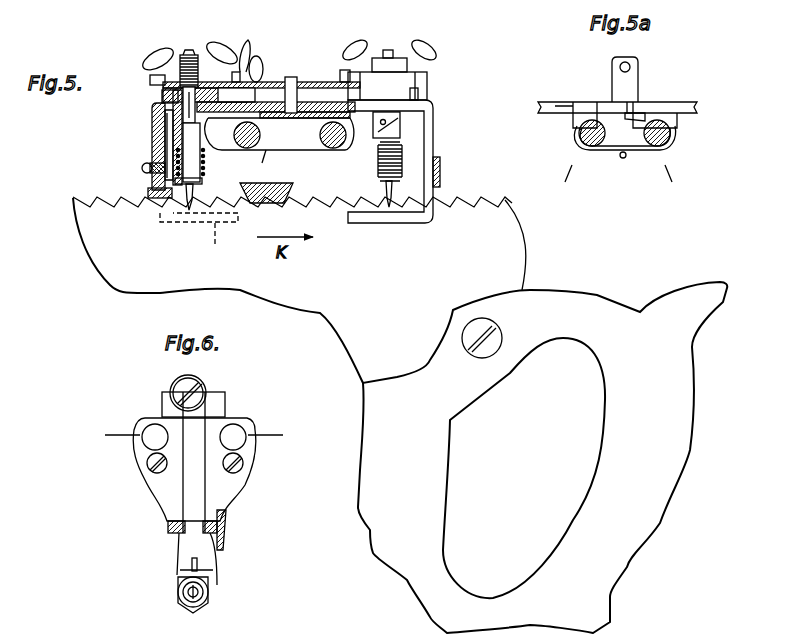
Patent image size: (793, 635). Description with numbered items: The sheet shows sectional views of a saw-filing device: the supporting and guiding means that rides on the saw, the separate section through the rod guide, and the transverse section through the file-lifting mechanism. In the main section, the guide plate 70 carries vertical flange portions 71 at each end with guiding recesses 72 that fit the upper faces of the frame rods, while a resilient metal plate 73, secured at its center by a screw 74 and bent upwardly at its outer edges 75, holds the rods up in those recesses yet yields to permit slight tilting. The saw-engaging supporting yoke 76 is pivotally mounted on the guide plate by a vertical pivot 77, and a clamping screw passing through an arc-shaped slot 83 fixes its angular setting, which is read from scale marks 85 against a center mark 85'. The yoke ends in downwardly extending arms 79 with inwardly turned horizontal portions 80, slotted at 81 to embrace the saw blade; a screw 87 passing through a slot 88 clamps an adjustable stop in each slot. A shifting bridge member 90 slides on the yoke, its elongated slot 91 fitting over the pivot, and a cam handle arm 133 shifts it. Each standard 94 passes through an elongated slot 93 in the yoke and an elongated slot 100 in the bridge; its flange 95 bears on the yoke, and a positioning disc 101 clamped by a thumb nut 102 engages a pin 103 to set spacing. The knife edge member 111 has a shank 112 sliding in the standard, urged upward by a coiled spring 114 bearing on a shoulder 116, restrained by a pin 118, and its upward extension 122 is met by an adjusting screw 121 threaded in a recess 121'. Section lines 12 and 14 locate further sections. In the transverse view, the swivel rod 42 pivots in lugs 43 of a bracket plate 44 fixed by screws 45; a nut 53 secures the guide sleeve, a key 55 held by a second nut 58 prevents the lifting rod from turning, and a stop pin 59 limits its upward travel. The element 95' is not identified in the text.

In FIG. 5, the section line 12 is at (388, 56).
In FIG. 5, the section line 14 is at (148, 83).
In FIG. 6, the swivel rod 42 is at (195, 493).
In FIG. 6, the lugs 43 is at (212, 412).
In FIG. 6, the bracket plate 44 is at (160, 485).
In FIG. 6, the screws 45 is at (150, 468).
In FIG. 6, the nut 53 is at (215, 568).
In FIG. 6, the key 55 is at (190, 562).
In FIG. 6, the second nut 58 is at (180, 588).
In FIG. 6, the stop pin 59 is at (208, 594).
In FIG. 5, the guide plate 70 is at (378, 125).
In FIG. 5, the vertical flange portions 71 is at (279, 134).
In FIG. 5A, the vertical flange portions 71 is at (620, 142).
In FIG. 5A, the guiding recesses 72 is at (677, 121).
In FIG. 5, the resilient metal plate 73 is at (316, 148).
In FIG. 5A, the resilient metal plate 73 is at (648, 158).
In FIG. 5, the screw 74 is at (266, 193).
In FIG. 5A, the screw 74 is at (624, 160).
In FIG. 5, the upwardly bent edges 75 is at (346, 148).
In FIG. 5A, the upwardly bent edges 75 is at (665, 150).
In FIG. 5, the supporting yoke 76 is at (398, 97).
In FIG. 5, the vertical pivot 77 is at (300, 84).
In FIG. 5, the downwardly extending arms 79 is at (436, 128).
In FIG. 5, the horizontal portions 80 is at (441, 237).
In FIG. 5, the slots 81 is at (155, 205).
In FIG. 5A, the arc-shaped slot 83 is at (630, 80).
In FIG. 5A, the scale marks 85 is at (617, 94).
In FIG. 5A, the center mark 85' is at (667, 97).
In FIG. 5, the screw 87 is at (142, 168).
In FIG. 5, the slot 88 is at (148, 190).
In FIG. 5, the shifting bridge member 90 is at (378, 58).
In FIG. 5, the elongated slot 91 is at (303, 85).
In FIG. 5, the elongated slot 93 is at (165, 116).
In FIG. 5, the standard 94 is at (176, 126).
In FIG. 5, the flange 95 is at (235, 95).
In FIG. 5, the nub 95' is at (436, 95).
In FIG. 5, the elongated slots 100 is at (226, 48).
In FIG. 5, the positioning disc 101 is at (246, 62).
In FIG. 5, the thumb nut 102 is at (160, 54).
In FIG. 5, the pin 103 is at (258, 70).
In FIG. 5, the knife edge member 111 is at (386, 183).
In FIG. 5, the shank 112 is at (201, 168).
In FIG. 5, the coiled spring 114 is at (403, 158).
In FIG. 5, the shoulder 116 is at (170, 208).
In FIG. 5, the pin 118 is at (172, 144).
In FIG. 5, the adjusting screw 121 is at (200, 62).
In FIG. 5, the recess 121' is at (134, 45).
In FIG. 5, the upward extension 122 is at (160, 92).
In FIG. 5, the handle arm 133 is at (290, 78).